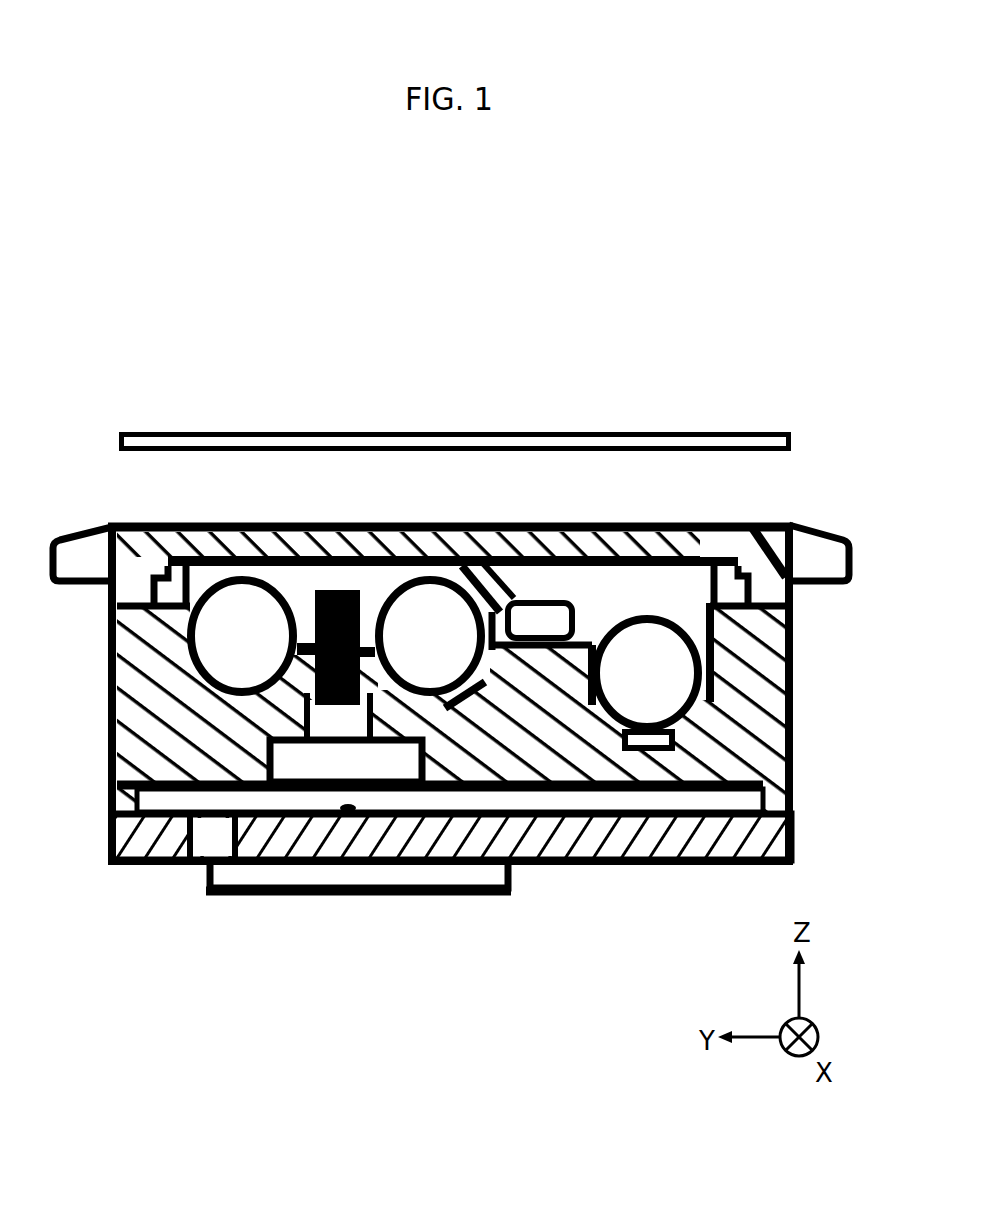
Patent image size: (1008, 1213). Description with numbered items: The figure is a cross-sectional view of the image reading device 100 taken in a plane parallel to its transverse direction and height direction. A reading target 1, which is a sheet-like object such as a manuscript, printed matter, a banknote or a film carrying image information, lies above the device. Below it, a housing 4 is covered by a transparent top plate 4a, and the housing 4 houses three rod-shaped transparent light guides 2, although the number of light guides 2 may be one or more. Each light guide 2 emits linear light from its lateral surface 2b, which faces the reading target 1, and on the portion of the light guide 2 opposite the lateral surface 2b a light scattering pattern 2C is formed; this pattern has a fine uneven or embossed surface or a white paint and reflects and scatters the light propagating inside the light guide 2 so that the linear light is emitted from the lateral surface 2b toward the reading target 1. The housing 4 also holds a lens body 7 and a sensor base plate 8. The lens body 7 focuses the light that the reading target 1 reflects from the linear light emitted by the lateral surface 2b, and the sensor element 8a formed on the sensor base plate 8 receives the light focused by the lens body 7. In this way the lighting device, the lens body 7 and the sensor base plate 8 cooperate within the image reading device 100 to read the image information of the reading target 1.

The image reading device 100 is at (258, 944).
The reading target 1 is at (686, 432).
The light guide 2 is at (220, 627).
The lateral surface 2b is at (273, 572).
The light scattering pattern 2C is at (213, 690).
The housing 4 is at (773, 723).
The top plate 4a is at (742, 522).
The lens body 7 is at (330, 588).
The sensor base plate 8 is at (597, 866).
The sensor element 8a is at (362, 850).